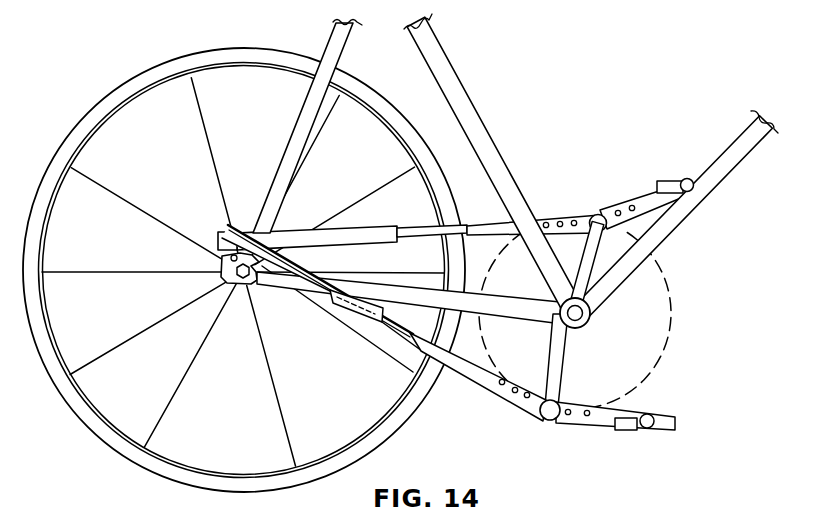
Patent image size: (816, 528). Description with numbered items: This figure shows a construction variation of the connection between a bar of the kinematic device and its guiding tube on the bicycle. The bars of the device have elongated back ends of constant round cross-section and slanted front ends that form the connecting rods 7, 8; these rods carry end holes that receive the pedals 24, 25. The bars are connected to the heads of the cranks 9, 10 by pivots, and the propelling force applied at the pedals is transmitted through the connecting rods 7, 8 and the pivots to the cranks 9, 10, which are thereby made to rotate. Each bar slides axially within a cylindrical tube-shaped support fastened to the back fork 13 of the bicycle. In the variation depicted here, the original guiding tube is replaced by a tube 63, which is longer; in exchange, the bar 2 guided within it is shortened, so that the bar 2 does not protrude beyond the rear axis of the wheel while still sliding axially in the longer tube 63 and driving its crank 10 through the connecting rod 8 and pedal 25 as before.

The bar 2 is at (487, 373).
The connecting rod 7 is at (628, 203).
The connecting rod 8 is at (608, 421).
The crank 9 is at (581, 279).
The crank 10 is at (560, 373).
The back fork 13 is at (297, 142).
The pedal 24 is at (630, 430).
The pedal 25 is at (670, 181).
The tube 63 is at (304, 276).